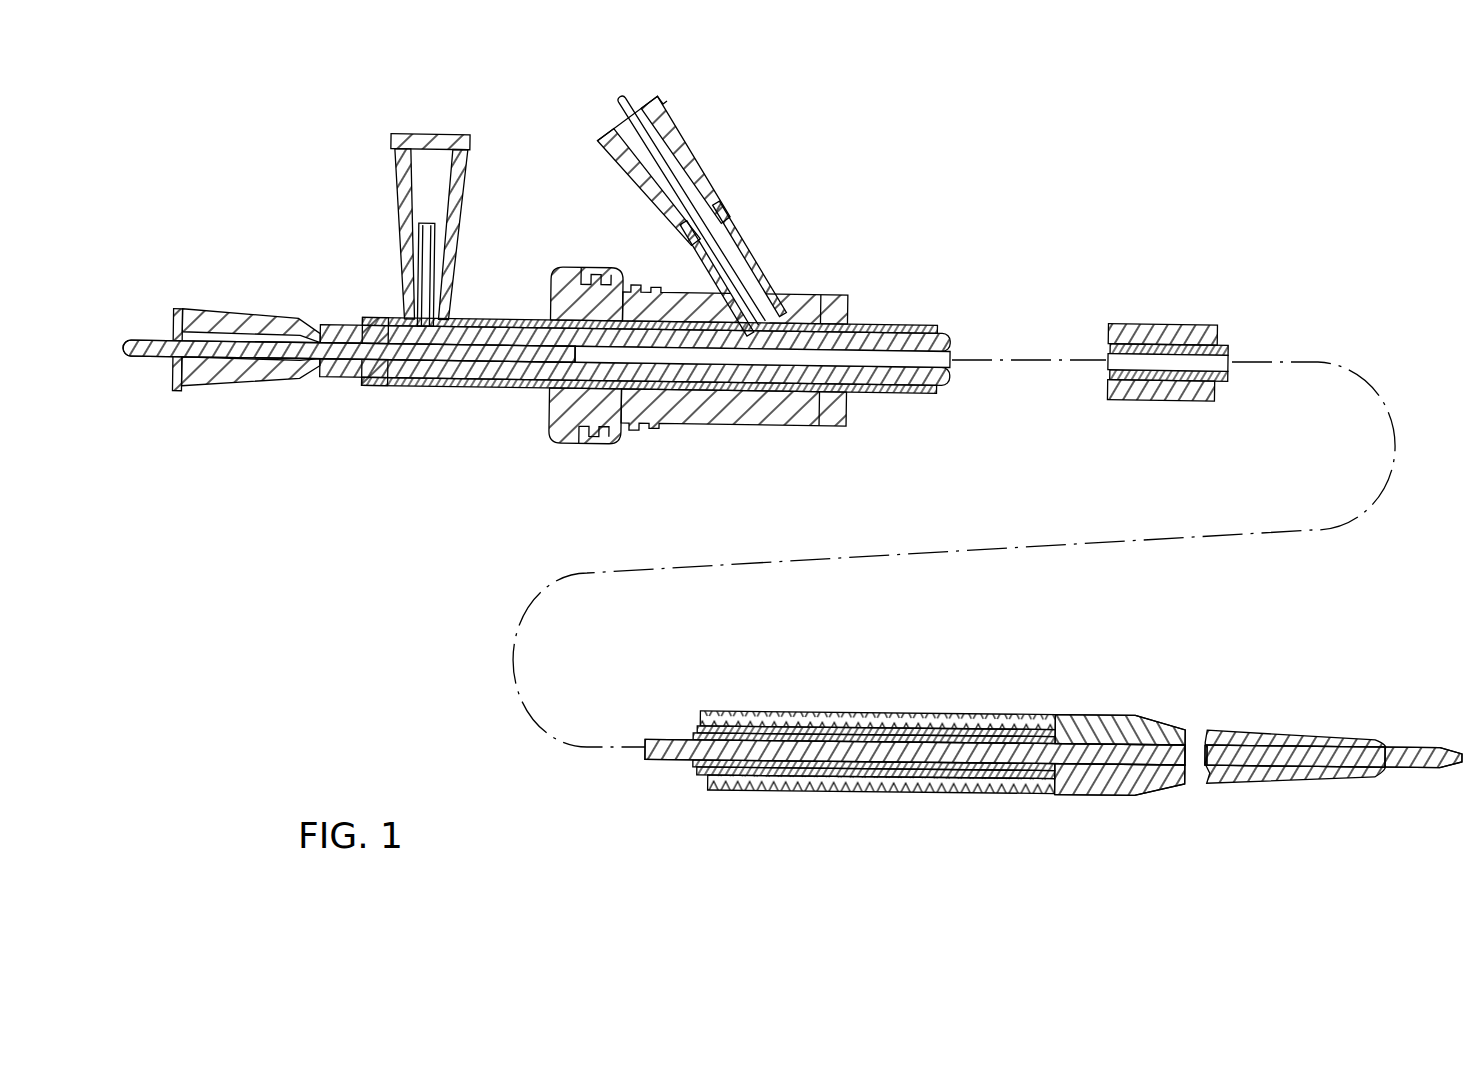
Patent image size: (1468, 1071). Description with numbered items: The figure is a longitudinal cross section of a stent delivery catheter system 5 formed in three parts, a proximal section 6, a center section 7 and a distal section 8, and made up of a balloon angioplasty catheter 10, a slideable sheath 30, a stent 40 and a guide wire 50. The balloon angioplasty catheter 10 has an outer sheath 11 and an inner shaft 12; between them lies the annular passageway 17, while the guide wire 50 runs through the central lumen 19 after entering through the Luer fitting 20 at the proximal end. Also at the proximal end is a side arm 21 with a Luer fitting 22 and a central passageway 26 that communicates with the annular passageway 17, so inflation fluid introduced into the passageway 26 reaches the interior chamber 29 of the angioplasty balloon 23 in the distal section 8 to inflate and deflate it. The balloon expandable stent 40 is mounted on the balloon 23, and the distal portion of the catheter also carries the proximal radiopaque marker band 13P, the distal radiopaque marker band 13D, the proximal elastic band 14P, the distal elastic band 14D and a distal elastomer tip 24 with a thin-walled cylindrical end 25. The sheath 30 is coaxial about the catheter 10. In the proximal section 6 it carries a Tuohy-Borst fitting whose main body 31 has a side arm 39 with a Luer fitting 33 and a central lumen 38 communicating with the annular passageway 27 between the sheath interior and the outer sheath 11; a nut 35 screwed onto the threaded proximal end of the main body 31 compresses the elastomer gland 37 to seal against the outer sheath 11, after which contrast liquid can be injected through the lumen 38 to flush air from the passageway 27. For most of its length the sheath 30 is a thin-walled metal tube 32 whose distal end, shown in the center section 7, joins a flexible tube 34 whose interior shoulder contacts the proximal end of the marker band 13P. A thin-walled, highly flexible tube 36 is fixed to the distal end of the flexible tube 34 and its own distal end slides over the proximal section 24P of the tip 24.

The stent delivery catheter system 5 is at (920, 243).
The proximal section 6 is at (583, 186).
The center section 7 is at (1189, 284).
The distal section 8 is at (977, 676).
The balloon angioplasty catheter 10 is at (224, 408).
The outer sheath 11 is at (496, 324).
The inner shaft 12 is at (340, 332).
The proximal radiopaque marker band 13P is at (742, 790).
The distal radiopaque marker band 13D is at (1055, 792).
The proximal elastic band 14P is at (792, 788).
The distal elastic band 14D is at (1020, 790).
The annular passageway 17 is at (1108, 380).
The central lumen 19 is at (872, 352).
The Luer fitting 20 is at (240, 318).
The side arm 21 is at (442, 318).
The Luer fitting 22 is at (396, 215).
The angioplasty balloon 23 is at (882, 792).
The distal elastomer tip 24 is at (1160, 714).
The proximal section of the tip 24P is at (1082, 714).
The thin-walled cylindrical end 25 is at (1348, 744).
The central passageway 26 is at (430, 230).
The annular passageway 27 is at (942, 340).
The interior chamber 29 is at (862, 768).
The slideable sheath 30 is at (868, 412).
The main body 31 is at (818, 292).
The thin-walled metal tube 32 is at (935, 332).
The Luer fitting 33 is at (705, 160).
The flexible tube 34 is at (1208, 322).
The nut 35 is at (580, 267).
The thin-walled highly flexible tube 36 is at (790, 713).
The elastomer gland 37 is at (708, 423).
The central lumen 38 is at (619, 108).
The side arm 39 is at (762, 262).
The balloon expandable stent 40 is at (838, 713).
The guide wire 50 is at (150, 336).